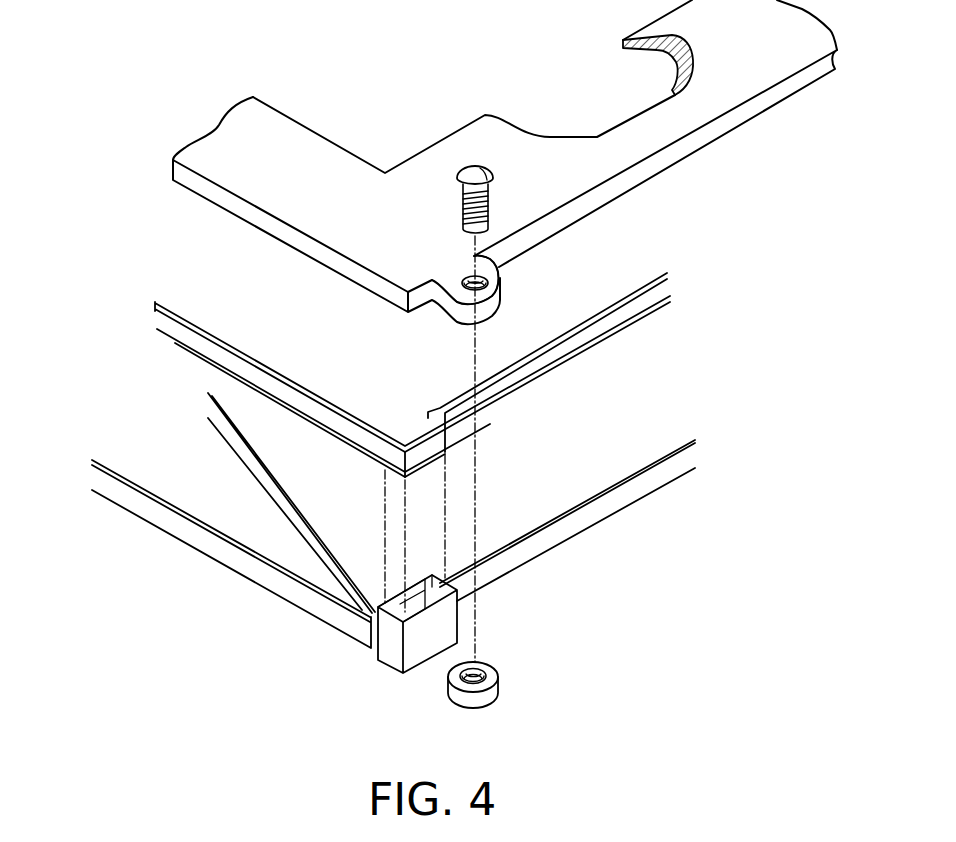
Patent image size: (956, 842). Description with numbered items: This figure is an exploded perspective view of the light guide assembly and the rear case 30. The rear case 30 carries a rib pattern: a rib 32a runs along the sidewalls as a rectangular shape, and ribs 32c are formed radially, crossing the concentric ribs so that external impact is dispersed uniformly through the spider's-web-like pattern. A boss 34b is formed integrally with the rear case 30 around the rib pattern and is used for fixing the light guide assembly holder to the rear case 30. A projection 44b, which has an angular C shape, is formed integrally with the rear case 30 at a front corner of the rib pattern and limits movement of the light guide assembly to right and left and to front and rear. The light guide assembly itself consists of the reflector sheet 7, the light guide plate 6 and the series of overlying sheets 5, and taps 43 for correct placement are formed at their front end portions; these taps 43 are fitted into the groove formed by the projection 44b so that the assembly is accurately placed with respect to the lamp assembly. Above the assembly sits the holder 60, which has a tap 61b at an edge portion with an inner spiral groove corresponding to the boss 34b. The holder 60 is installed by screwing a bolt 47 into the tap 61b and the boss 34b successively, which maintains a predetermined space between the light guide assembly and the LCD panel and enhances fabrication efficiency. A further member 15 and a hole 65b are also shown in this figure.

The series of overlying sheets 5 is at (154, 306).
The light guide plate 6 is at (162, 328).
The reflector sheet 7 is at (176, 344).
The frame member 15 is at (673, 499).
The rear case 30 is at (147, 540).
The rib 32a is at (245, 563).
The ribs 32c is at (232, 443).
The boss 34b is at (488, 668).
The taps 43 is at (422, 428).
The projection 44b is at (418, 643).
The bolt 47 is at (488, 172).
The holder 60 is at (722, 167).
The tap 61b is at (494, 303).
The screw hole 65b is at (490, 271).